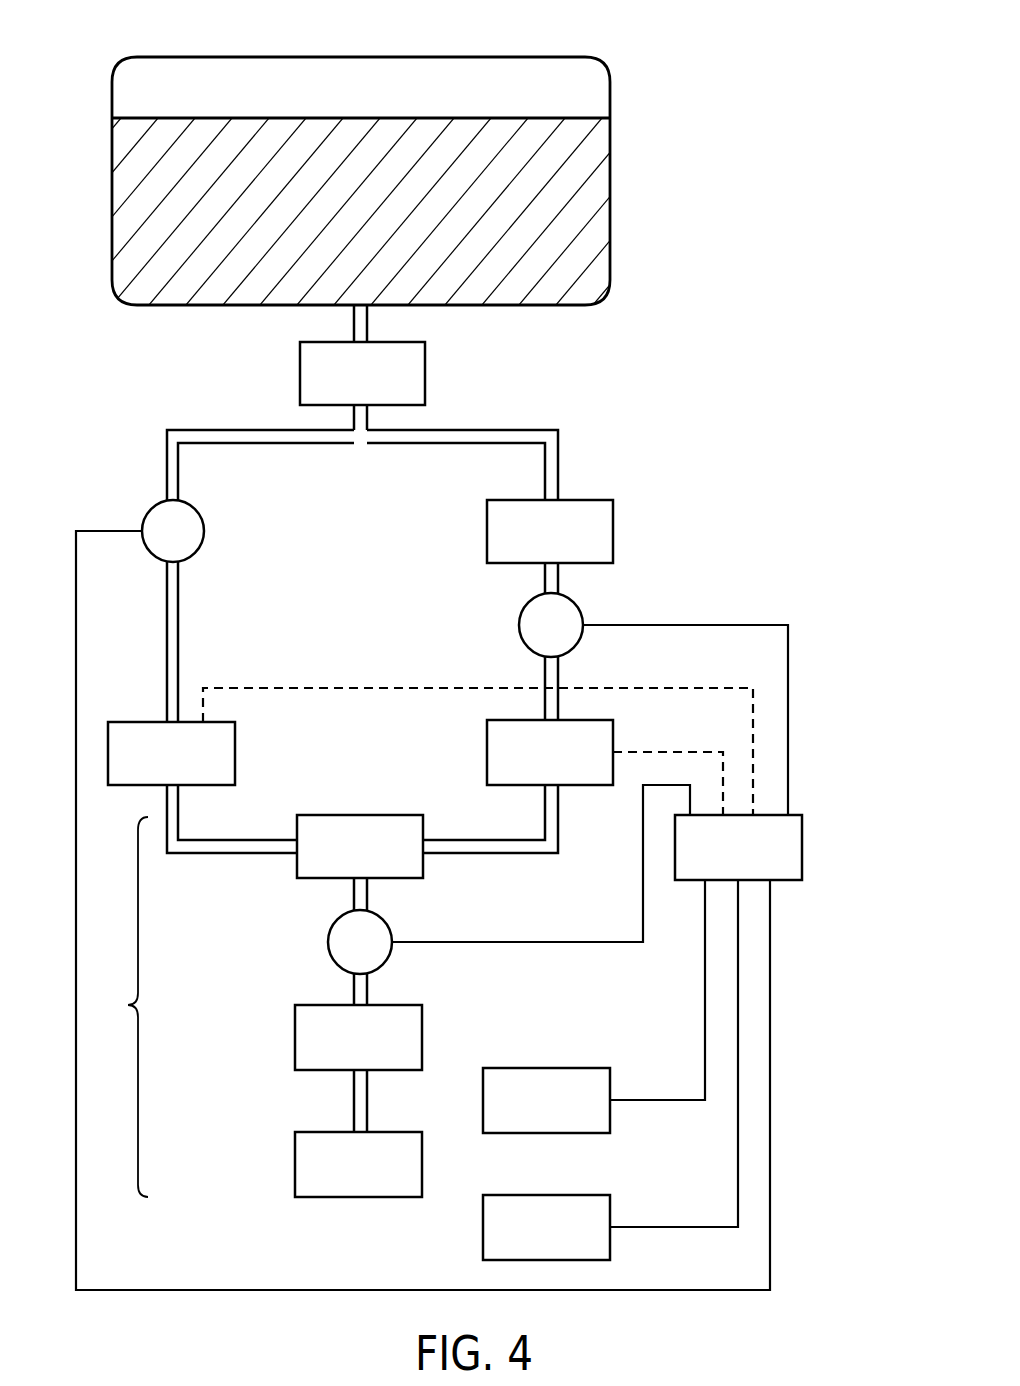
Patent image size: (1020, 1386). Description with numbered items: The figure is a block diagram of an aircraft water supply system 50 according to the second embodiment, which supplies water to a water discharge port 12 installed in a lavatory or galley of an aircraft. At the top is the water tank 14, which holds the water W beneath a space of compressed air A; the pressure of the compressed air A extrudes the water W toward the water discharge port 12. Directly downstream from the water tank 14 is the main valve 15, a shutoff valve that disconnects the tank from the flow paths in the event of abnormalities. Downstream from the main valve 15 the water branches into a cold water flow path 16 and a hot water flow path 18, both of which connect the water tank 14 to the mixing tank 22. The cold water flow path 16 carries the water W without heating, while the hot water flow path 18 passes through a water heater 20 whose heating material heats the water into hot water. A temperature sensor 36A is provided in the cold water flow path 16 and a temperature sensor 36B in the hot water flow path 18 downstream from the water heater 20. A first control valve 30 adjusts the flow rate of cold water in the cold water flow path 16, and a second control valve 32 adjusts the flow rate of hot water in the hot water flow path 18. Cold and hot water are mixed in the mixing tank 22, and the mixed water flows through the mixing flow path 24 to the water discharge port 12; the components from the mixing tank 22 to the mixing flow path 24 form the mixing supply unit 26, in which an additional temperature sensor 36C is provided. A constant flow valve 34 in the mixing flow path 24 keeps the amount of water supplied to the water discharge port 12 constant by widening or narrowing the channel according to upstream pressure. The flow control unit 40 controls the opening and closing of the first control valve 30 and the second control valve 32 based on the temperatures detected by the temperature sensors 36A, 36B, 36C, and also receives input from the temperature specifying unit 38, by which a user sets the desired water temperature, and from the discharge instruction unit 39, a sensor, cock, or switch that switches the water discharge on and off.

The water tank 14 is at (318, 56).
The compressed air A is at (459, 72).
The water W is at (540, 197).
The aircraft water supply system 50 is at (651, 55).
The main valve 15 is at (428, 350).
The cold water flow path 16 is at (180, 484).
The hot water flow path 18 is at (560, 465).
The water heater 20 is at (615, 512).
The temperature sensor 36A is at (201, 548).
The temperature sensor 36B is at (518, 628).
The temperature sensor 36C is at (390, 926).
The first control valve 30 is at (237, 733).
The second control valve 32 is at (615, 723).
The mixing tank 22 is at (408, 814).
The mixing flow path 24 is at (353, 891).
The mixing supply unit 26 is at (120, 1007).
The constant flow valve 34 is at (295, 1018).
The water discharge port 12 is at (295, 1143).
The flow control unit 40 is at (803, 830).
The temperature specifying unit 38 is at (612, 1122).
The discharge instruction unit 39 is at (612, 1203).